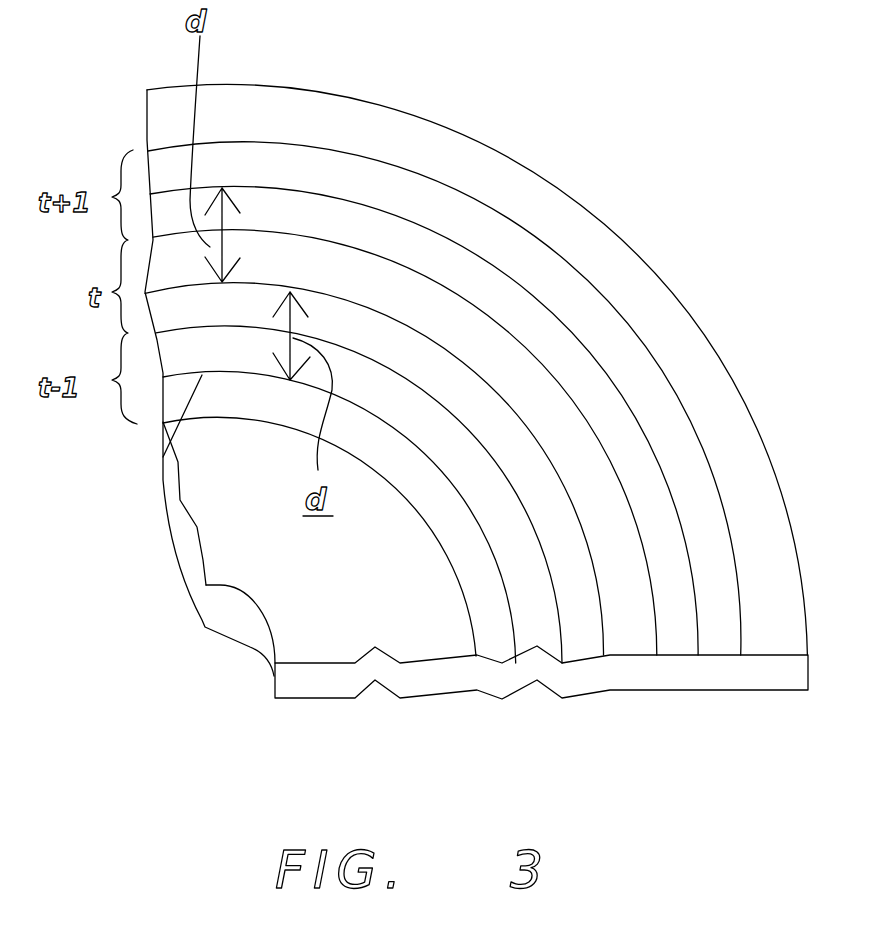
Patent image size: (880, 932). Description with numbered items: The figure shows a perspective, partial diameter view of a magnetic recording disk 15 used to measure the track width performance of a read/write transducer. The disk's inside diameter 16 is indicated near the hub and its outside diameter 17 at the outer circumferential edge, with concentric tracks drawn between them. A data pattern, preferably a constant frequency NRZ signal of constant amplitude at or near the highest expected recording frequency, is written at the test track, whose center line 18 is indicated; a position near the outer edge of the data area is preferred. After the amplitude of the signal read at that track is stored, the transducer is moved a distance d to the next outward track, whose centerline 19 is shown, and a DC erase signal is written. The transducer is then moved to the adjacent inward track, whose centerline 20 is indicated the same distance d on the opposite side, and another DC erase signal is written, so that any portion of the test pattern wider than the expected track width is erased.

The magnetic recording disk 15 is at (688, 213).
The inside diameter 16 is at (250, 647).
The outside diameter 17 is at (683, 310).
The center line of track t 18 is at (388, 318).
The centerline of track t+1 19 is at (300, 197).
The centerline of track t−1 20 is at (165, 455).